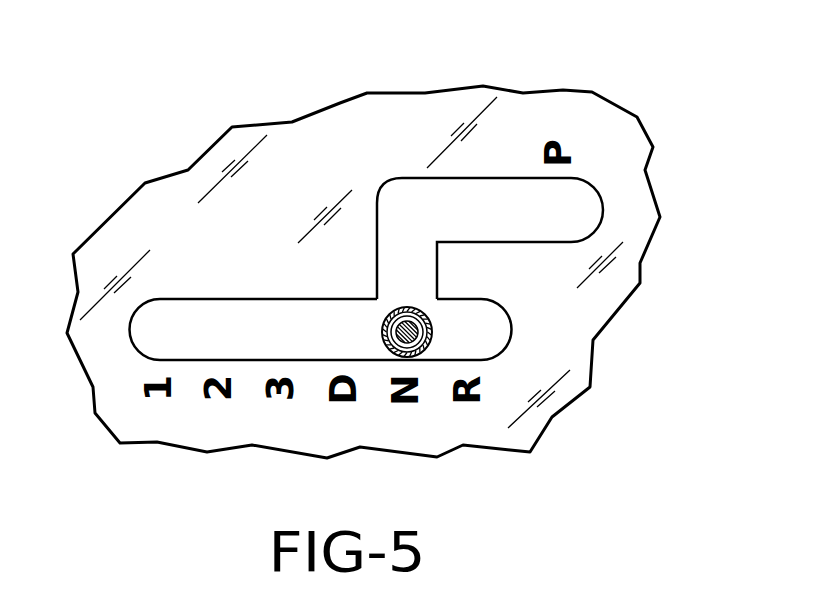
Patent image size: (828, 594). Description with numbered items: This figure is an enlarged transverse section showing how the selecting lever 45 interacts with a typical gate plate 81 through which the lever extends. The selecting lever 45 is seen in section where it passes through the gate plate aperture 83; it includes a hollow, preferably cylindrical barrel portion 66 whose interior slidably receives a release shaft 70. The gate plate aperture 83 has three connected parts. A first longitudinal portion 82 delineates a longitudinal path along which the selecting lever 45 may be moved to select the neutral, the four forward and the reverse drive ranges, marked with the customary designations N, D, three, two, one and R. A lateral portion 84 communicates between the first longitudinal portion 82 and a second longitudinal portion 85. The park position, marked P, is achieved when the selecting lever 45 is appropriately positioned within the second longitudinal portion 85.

The selecting lever 45 is at (404, 309).
The barrel portion 66 is at (403, 308).
The release shaft 70 is at (413, 330).
The gate plate 81 is at (602, 115).
The first longitudinal portion 82 is at (172, 335).
The gate plate aperture 83 is at (448, 338).
The lateral portion 84 is at (412, 251).
The second longitudinal portion 85 is at (443, 210).